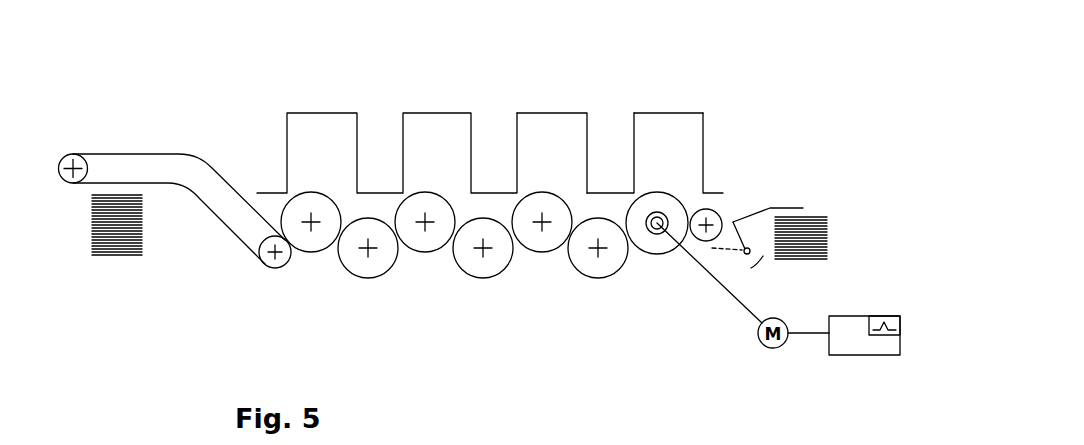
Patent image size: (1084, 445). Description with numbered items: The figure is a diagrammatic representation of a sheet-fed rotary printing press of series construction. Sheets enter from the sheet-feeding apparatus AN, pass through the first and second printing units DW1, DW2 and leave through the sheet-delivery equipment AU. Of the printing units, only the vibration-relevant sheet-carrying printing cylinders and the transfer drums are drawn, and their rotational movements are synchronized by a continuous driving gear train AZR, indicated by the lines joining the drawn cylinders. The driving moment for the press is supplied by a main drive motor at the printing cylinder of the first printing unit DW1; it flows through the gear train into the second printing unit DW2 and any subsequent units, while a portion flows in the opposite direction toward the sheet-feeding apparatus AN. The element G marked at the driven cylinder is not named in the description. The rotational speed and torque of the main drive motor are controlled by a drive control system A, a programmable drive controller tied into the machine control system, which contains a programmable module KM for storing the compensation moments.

The sheet-delivery equipment AU is at (113, 163).
The first printing unit DW1 is at (669, 135).
The second printing unit DW2 is at (551, 135).
The gripper cylinder / encoder drum G is at (657, 223).
The drive gear train AZR is at (652, 253).
The sheet-feeding apparatus AN is at (767, 263).
The programmable module KM is at (900, 318).
The drive control system A is at (888, 345).